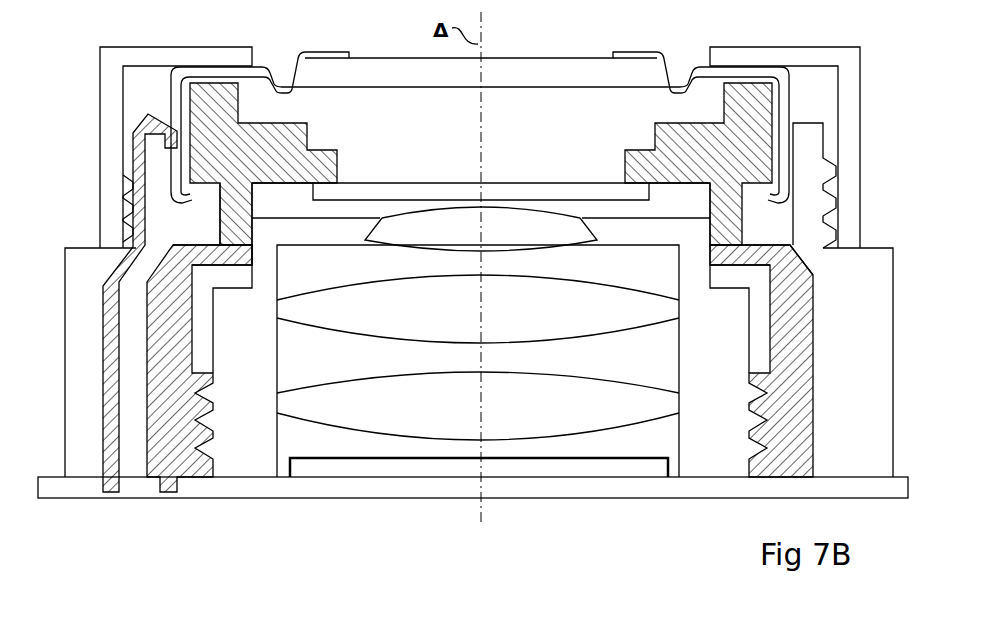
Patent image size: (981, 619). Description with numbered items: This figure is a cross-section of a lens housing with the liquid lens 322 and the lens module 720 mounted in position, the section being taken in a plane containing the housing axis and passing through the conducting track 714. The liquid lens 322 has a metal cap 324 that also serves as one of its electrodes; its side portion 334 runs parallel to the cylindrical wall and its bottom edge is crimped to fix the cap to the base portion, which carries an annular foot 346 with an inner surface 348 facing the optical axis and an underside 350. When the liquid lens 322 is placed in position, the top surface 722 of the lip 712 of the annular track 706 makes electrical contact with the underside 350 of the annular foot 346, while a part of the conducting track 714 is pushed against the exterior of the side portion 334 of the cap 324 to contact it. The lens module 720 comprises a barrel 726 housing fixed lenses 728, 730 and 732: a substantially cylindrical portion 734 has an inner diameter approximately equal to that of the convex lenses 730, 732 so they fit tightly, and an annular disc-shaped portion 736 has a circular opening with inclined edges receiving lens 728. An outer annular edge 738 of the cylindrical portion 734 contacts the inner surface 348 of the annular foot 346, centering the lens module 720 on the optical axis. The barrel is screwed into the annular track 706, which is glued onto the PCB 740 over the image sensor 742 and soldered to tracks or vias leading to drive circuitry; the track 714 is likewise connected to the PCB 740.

The liquid lens 322 is at (534, 56).
The metal cap 324 is at (645, 35).
The side portion 334 is at (788, 105).
The annular foot 346 is at (218, 220).
The inner surface 348 is at (253, 197).
The underside 350 is at (710, 216).
The annular track 706 is at (777, 425).
The lip 712 is at (728, 264).
The conducting track 714 is at (100, 298).
The lens module 720 is at (593, 217).
The top surface 722 is at (758, 252).
The barrel 726 is at (281, 440).
The fixed lens 728 is at (553, 247).
The fixed convex lens 730 is at (585, 338).
The fixed convex lens 732 is at (598, 431).
The cylindrical portion 734 is at (237, 462).
The annular disc-shaped portion 736 is at (311, 231).
The outer annular edge 738 is at (252, 278).
The PCB 740 is at (585, 487).
The image sensor 742 is at (492, 478).